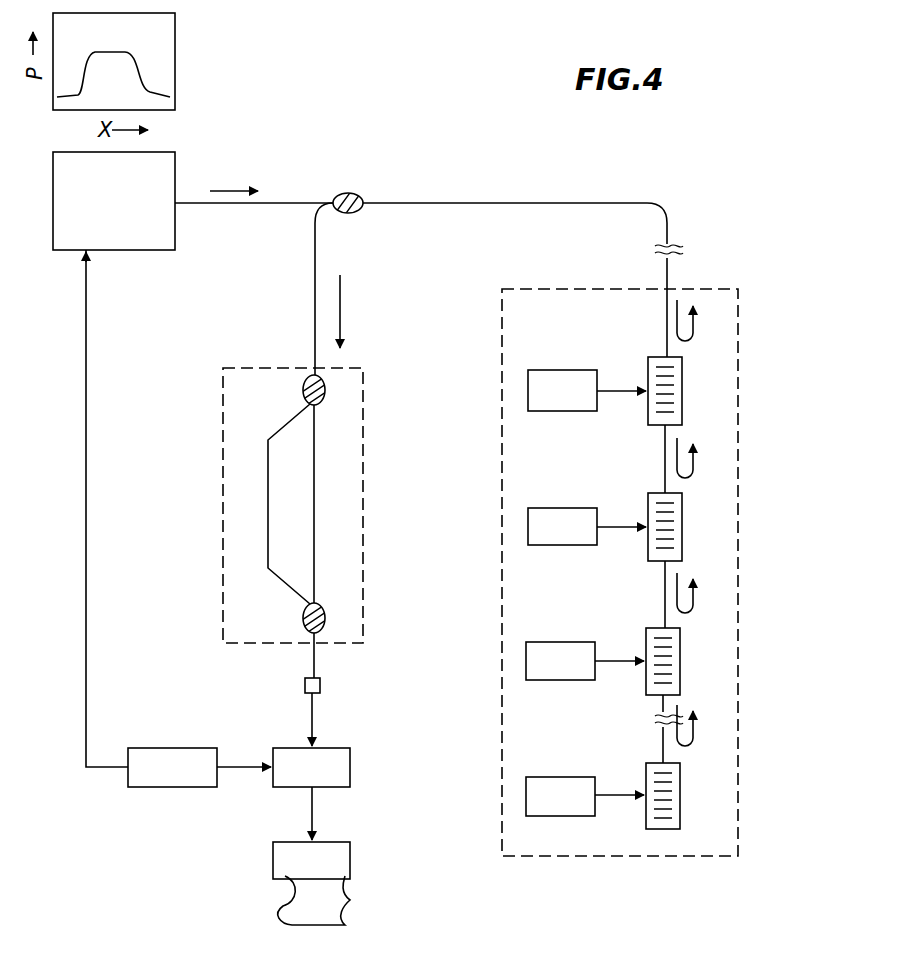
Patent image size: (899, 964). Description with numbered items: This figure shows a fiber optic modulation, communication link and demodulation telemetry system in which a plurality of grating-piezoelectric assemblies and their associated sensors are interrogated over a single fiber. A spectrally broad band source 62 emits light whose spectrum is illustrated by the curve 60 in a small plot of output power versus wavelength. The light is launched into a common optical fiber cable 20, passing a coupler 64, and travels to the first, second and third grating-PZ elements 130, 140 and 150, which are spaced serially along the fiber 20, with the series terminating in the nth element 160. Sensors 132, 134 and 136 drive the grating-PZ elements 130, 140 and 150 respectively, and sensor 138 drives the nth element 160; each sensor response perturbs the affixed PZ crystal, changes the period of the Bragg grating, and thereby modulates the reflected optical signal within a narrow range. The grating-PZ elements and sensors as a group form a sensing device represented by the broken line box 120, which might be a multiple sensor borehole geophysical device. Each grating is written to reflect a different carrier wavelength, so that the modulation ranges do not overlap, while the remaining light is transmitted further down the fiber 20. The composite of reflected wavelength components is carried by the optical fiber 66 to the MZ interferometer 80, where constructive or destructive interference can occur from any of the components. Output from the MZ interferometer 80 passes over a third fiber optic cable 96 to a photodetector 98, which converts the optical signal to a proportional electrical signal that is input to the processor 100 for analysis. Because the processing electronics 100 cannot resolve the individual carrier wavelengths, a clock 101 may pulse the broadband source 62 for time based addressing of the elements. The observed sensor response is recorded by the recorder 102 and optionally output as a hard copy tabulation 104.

The optical fiber cable 20 is at (497, 205).
The emitted spectrum curve 60 is at (118, 50).
The broad band source 62 is at (175, 163).
The optical coupler 64 is at (360, 196).
The optical fiber 66 is at (314, 270).
The MZ interferometer 80 is at (363, 437).
The third fiber optic cable 96 is at (315, 660).
The photodetector 98 is at (305, 688).
The processor 100 is at (340, 787).
The clock 101 is at (183, 787).
The recorder 102 is at (292, 842).
The hard copy tabulation 104 is at (322, 925).
The sensing device 120 is at (740, 318).
The first grating-PZ element 130 is at (682, 382).
The sensor 132 is at (577, 411).
The sensor 134 is at (580, 545).
The sensor 136 is at (578, 680).
The sensor 138 is at (571, 777).
The second grating-PZ element 140 is at (682, 530).
The third grating-PZ element 150 is at (680, 673).
The nth grating-PZ element 160 is at (680, 800).